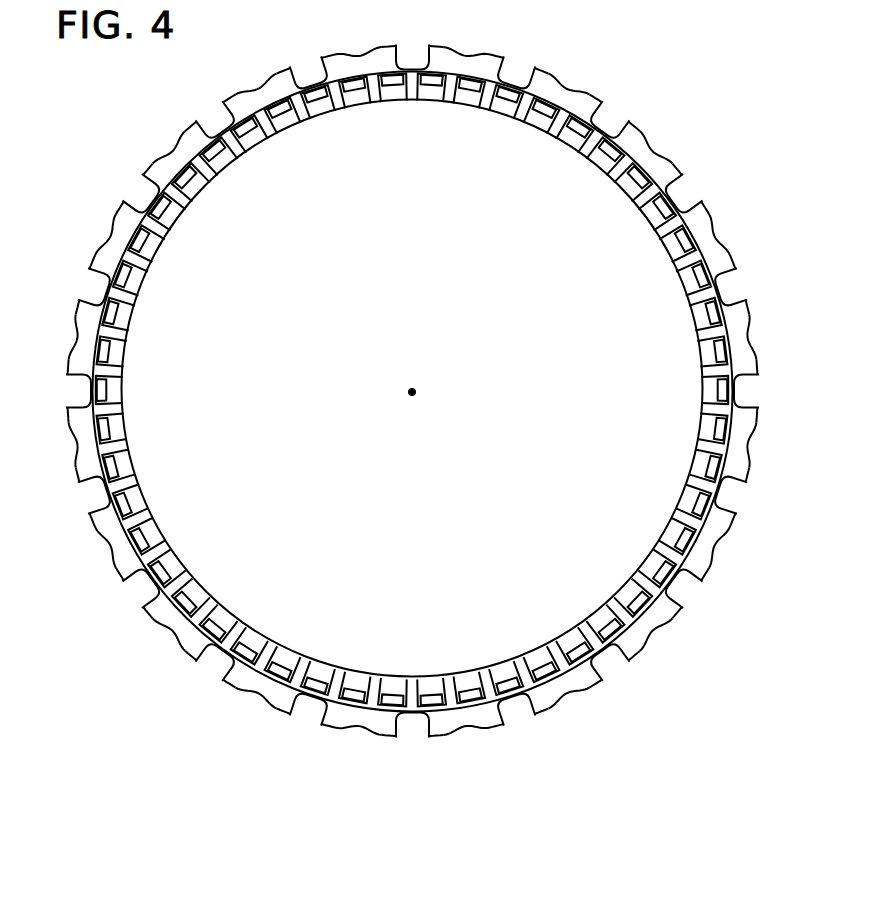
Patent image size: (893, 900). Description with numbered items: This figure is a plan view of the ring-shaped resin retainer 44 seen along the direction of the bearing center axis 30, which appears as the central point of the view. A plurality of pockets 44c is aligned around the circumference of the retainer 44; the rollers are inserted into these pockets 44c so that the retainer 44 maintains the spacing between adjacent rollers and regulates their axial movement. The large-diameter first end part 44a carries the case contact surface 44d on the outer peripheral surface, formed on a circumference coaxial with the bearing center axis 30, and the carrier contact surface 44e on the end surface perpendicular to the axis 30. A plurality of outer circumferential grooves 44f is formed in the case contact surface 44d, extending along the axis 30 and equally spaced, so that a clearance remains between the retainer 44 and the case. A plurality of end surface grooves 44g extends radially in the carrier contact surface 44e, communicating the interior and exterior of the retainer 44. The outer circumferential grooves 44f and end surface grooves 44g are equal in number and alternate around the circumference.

The retainer 44 is at (646, 26).
The first end part 44a is at (815, 247).
The pockets 44c is at (610, 158).
The case contact surface 44d is at (732, 261).
The carrier contact surface 44e is at (740, 316).
The outer circumferential grooves 44f is at (747, 447).
The end surface grooves 44g is at (733, 498).
The bearing center axis 30 is at (414, 392).